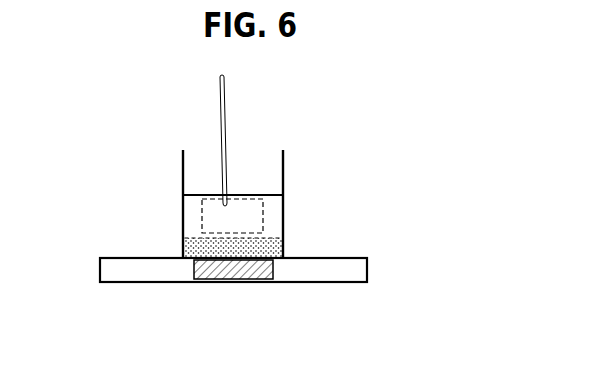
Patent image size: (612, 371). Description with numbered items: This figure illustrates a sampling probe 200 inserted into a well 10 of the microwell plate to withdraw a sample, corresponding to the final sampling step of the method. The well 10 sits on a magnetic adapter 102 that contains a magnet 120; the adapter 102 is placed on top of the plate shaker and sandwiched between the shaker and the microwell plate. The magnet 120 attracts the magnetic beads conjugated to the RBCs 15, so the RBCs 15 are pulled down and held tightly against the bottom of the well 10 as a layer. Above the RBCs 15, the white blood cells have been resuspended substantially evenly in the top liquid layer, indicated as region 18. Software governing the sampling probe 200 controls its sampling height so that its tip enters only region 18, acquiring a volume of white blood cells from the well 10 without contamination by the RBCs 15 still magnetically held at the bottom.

The sampling probe 200 is at (225, 120).
The region 18 is at (263, 212).
The well 10 is at (284, 219).
The RBCs 15 is at (284, 248).
The magnet 120 is at (194, 272).
The magnetic adapter 102 is at (305, 283).